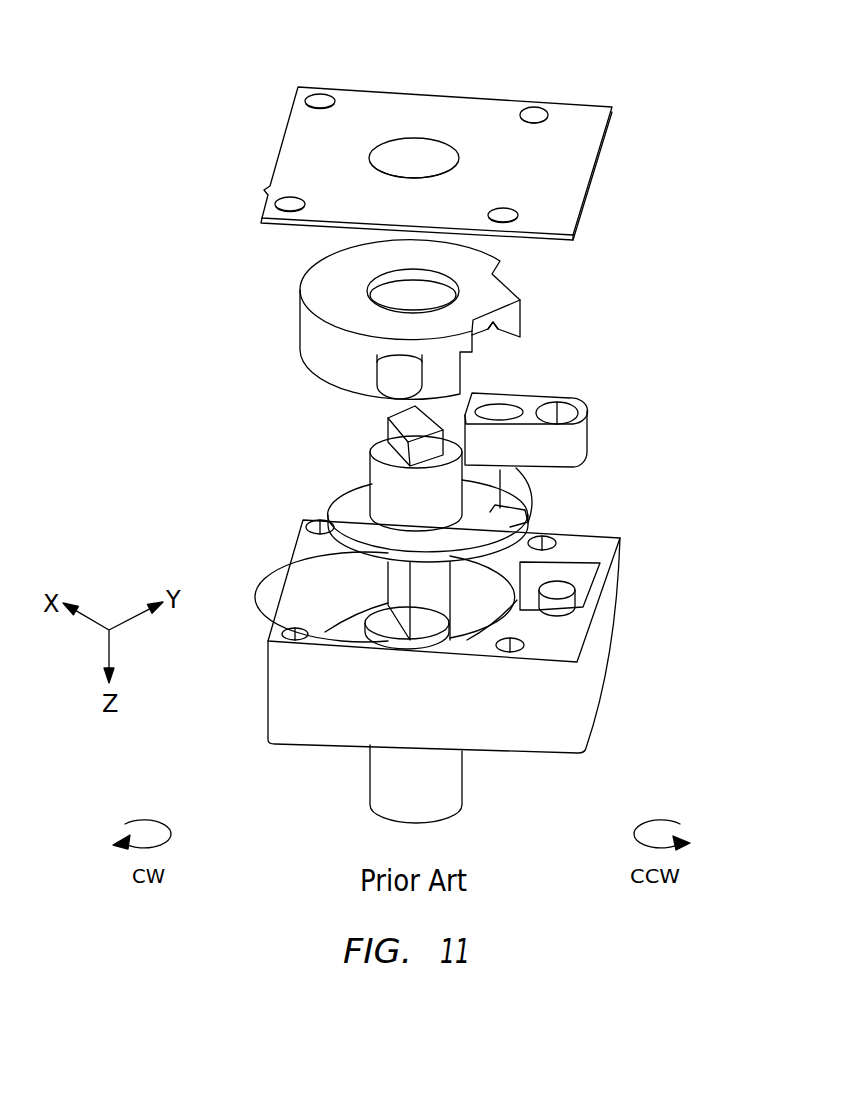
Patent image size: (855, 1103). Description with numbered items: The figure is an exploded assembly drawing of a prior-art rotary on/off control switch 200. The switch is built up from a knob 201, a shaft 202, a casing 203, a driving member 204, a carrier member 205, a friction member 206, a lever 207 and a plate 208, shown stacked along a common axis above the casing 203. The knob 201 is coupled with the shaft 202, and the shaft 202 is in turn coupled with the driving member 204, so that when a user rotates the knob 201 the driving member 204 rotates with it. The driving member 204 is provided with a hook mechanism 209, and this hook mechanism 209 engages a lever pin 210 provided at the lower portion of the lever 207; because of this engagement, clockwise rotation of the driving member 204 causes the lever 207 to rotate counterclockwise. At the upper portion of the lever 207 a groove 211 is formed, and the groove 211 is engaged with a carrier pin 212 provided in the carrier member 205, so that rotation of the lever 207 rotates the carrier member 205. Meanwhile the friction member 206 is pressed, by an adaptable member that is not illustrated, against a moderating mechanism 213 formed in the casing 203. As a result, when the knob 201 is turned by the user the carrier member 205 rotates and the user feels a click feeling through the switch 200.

The rotary on/off control switch 200 is at (493, 34).
The knob 201 is at (462, 782).
The shaft 202 is at (400, 600).
The casing 203 is at (457, 654).
The driving member 204 is at (370, 462).
The carrier member 205 is at (402, 320).
The friction member 206 is at (390, 383).
The lever 207 is at (559, 409).
The plate 208 is at (600, 153).
The hook mechanism 209 is at (476, 515).
The lever pin 210 is at (522, 477).
The groove 211 is at (495, 408).
The carrier pin 212 is at (510, 330).
The moderating mechanism 213 is at (400, 640).